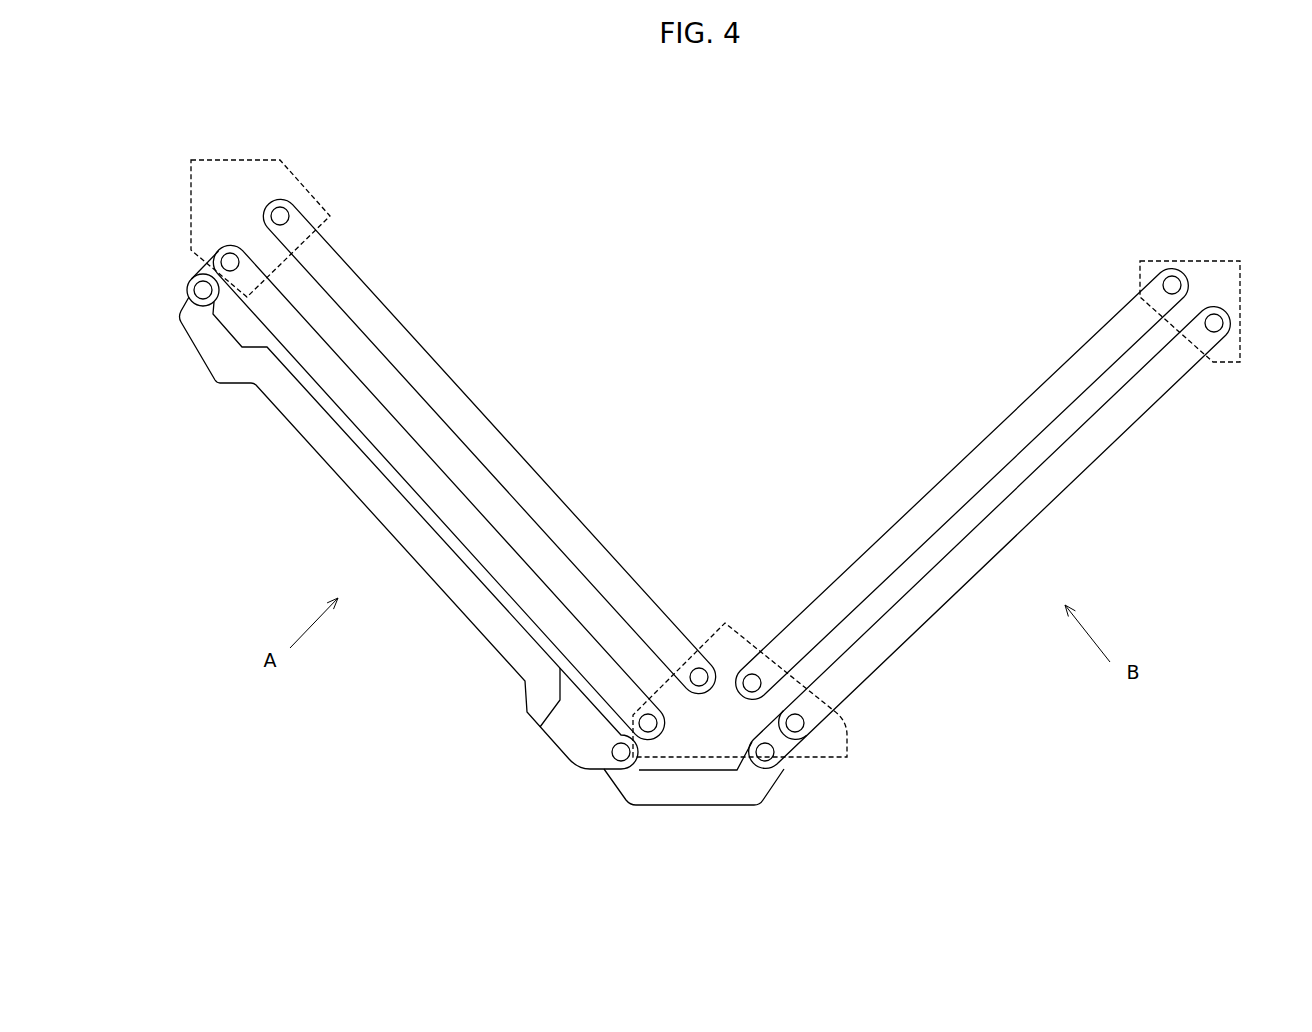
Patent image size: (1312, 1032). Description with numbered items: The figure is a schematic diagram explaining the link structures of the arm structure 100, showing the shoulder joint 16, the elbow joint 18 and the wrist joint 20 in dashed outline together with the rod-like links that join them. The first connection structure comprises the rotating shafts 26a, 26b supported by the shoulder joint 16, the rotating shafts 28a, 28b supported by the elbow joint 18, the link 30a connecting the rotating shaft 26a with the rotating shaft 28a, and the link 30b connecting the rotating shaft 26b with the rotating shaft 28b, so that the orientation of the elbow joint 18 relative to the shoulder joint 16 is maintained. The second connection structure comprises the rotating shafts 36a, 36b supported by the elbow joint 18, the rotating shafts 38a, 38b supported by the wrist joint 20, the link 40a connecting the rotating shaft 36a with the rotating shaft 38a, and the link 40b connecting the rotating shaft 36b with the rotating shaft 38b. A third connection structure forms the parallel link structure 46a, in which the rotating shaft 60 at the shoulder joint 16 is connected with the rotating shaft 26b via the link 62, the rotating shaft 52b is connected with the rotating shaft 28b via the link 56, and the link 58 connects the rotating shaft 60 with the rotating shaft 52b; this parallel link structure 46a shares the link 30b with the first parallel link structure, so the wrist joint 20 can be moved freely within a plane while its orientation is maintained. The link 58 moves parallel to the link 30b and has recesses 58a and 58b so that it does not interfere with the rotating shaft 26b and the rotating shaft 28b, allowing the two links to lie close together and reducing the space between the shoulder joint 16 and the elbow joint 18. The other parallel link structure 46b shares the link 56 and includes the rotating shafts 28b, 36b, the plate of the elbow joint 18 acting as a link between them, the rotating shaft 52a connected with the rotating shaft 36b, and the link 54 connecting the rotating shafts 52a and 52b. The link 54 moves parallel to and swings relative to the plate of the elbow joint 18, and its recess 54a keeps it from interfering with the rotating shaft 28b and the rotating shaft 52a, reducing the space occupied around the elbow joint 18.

The shoulder joint 16 is at (268, 160).
The elbow joint 18 is at (725, 622).
The wrist joint 20 is at (1240, 317).
The rotating shaft 26a is at (297, 213).
The rotating shaft 26b is at (228, 247).
The rotating shaft 28a is at (697, 663).
The rotating shaft 28b is at (645, 706).
The link 30a is at (560, 470).
The link 30b is at (455, 548).
The rotating shaft 36a is at (751, 666).
The rotating shaft 36b is at (836, 758).
The rotating shaft 38a is at (1150, 287).
The rotating shaft 38b is at (1213, 338).
The link 40a is at (992, 430).
The link 40b is at (1070, 485).
The parallel link structure 46a is at (485, 680).
The parallel link structure 46b is at (753, 817).
The rotating shaft 52a is at (770, 773).
The rotating shaft 52b is at (612, 753).
The link 54 is at (695, 807).
The recess 54a is at (694, 756).
The link 56 is at (663, 775).
The link 58 is at (450, 622).
The recess 58a is at (240, 327).
The recess 58b is at (586, 712).
The rotating shaft 60 is at (188, 291).
The link 62 is at (210, 257).
The arm structure 100 is at (545, 927).